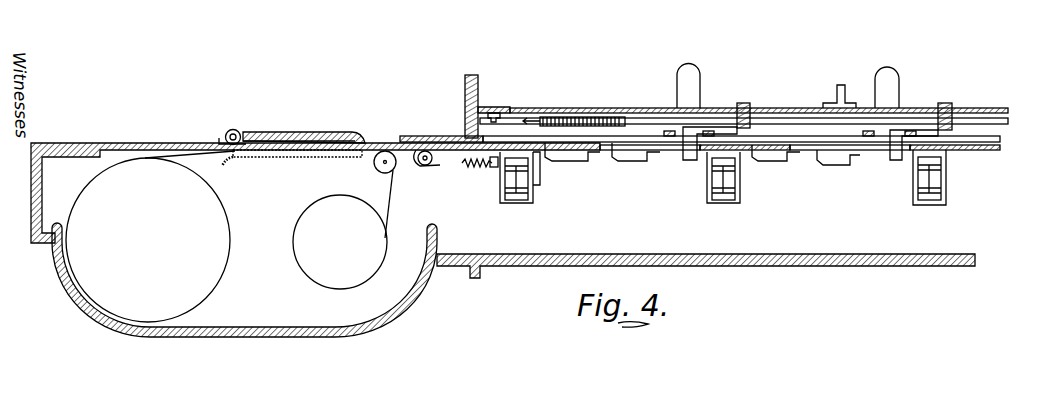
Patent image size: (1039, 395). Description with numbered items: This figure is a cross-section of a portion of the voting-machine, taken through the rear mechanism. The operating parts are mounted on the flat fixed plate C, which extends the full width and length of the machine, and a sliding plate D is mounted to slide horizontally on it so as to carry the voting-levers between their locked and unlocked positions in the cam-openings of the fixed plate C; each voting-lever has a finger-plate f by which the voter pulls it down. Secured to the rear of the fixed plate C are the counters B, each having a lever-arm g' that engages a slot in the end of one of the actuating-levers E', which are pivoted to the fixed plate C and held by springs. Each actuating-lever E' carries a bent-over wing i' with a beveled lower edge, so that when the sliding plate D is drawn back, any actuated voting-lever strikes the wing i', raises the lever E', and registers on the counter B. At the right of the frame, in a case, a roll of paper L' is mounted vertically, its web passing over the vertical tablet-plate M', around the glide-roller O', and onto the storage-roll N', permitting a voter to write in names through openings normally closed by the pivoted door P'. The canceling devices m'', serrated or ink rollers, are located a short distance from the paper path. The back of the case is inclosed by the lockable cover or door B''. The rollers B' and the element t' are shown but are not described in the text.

The fixed plate C is at (141, 142).
The cover or door B'' is at (706, 278).
The roll of paper L' is at (150, 236).
The storage-roll N' is at (343, 229).
The glide-roller O' is at (408, 176).
The door P' is at (292, 119).
The tablet-plate M' is at (292, 171).
The sliding plate D is at (640, 107).
The finger-plate f is at (702, 79).
The lever-arm g' is at (735, 158).
The wing i' is at (679, 169).
The actuating-levers E' is at (736, 168).
The counters B is at (520, 192).
The roller B' is at (814, 191).
The canceling devices m'' is at (453, 167).
The stop t' is at (483, 181).